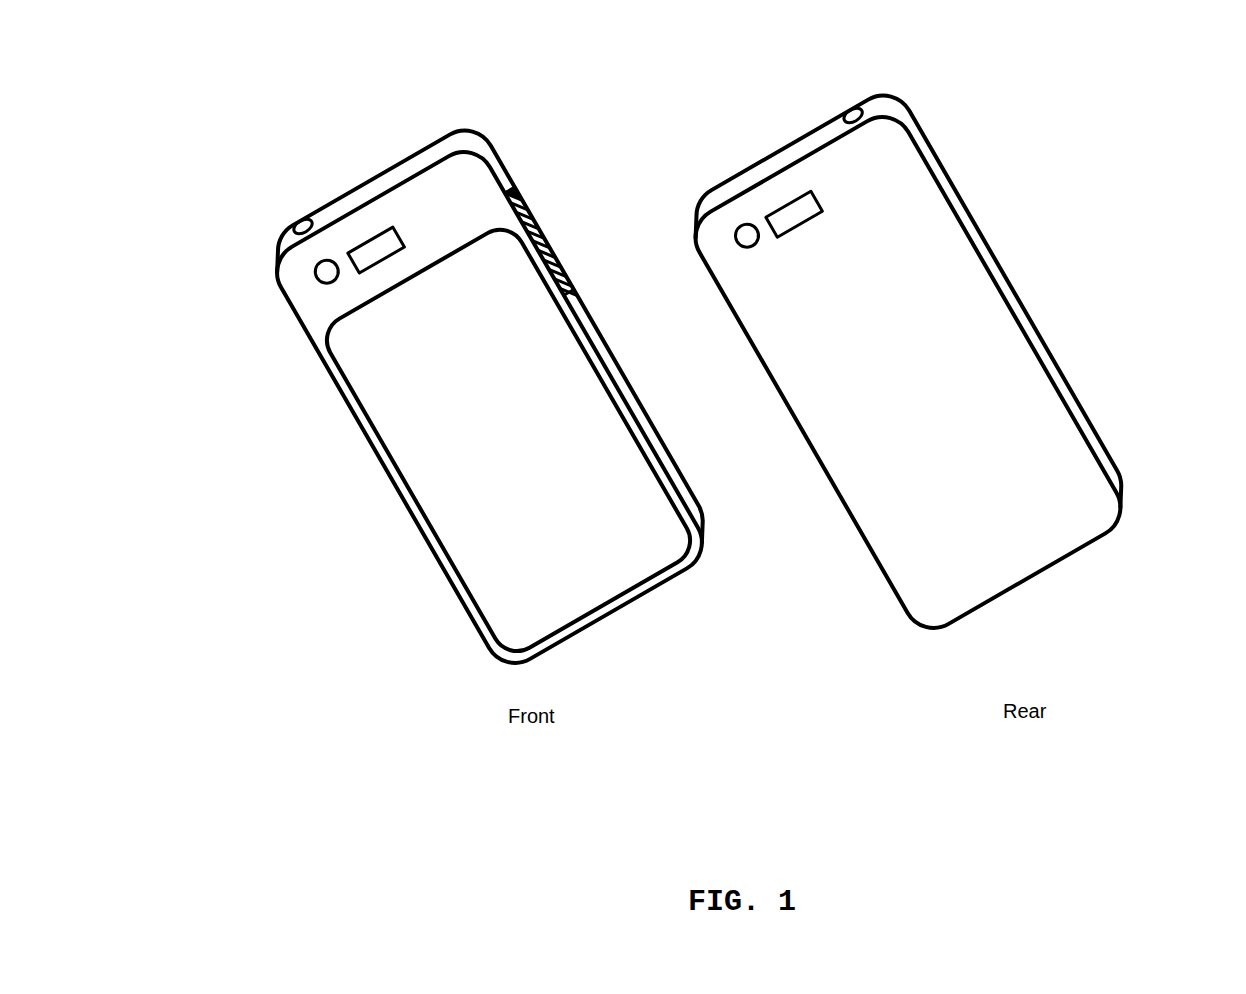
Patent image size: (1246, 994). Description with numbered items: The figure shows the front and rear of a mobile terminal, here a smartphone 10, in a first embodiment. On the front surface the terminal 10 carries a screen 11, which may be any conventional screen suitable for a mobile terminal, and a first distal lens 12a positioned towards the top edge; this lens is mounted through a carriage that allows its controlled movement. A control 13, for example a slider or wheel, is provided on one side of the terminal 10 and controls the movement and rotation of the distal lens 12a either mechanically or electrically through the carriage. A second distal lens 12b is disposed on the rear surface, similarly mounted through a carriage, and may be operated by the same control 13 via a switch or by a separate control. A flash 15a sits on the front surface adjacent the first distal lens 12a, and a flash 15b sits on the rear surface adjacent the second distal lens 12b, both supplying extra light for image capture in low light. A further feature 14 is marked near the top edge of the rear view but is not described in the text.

The smartphone 10 is at (338, 104).
The screen 11 is at (508, 441).
The first distal lens 12a is at (312, 286).
The second distal lens 12b is at (747, 251).
The control 13 is at (542, 212).
The earphone jack 14 is at (878, 108).
The flash 15a is at (369, 261).
The flash 15b is at (803, 212).